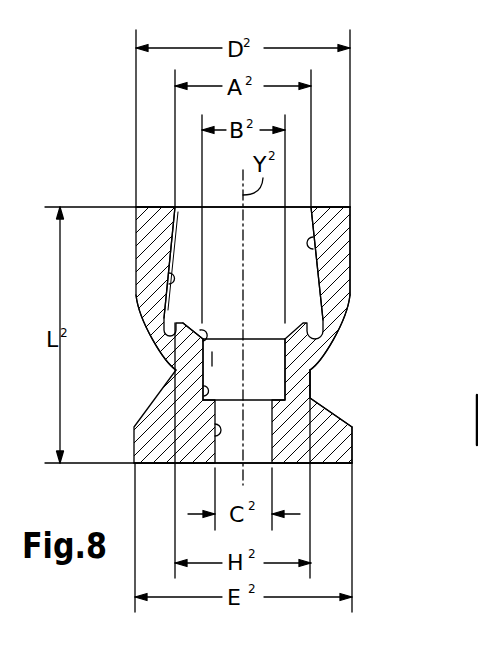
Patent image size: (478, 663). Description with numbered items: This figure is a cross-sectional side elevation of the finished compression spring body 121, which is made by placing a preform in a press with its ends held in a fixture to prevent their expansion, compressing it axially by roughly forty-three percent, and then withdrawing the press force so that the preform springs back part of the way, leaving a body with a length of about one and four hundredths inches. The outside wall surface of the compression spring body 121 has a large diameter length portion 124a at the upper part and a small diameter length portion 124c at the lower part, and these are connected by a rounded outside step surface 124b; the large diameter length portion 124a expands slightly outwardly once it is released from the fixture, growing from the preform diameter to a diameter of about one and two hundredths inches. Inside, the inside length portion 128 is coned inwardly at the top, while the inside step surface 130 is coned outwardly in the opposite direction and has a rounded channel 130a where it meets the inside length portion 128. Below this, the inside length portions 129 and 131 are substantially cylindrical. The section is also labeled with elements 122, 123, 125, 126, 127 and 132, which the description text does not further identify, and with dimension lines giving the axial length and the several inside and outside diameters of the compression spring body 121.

The compression spring body 121 is at (362, 184).
The hollow interior 122 is at (229, 257).
The inner wall rib 123 is at (313, 249).
The large diameter length portion 124a is at (352, 278).
The rounded outside step surface 124b is at (338, 340).
The small diameter length portion 124c is at (310, 387).
The top end wall 125 is at (335, 224).
The bottom flange 126 is at (332, 439).
The chamfered surface 127 is at (330, 408).
The inside length portion 128 is at (168, 282).
The inside length portion 129 is at (284, 374).
The inside step surface 130 is at (175, 369).
The rounded channel 130a is at (158, 323).
The inside length portion 131 is at (220, 437).
The slot 132 is at (203, 391).